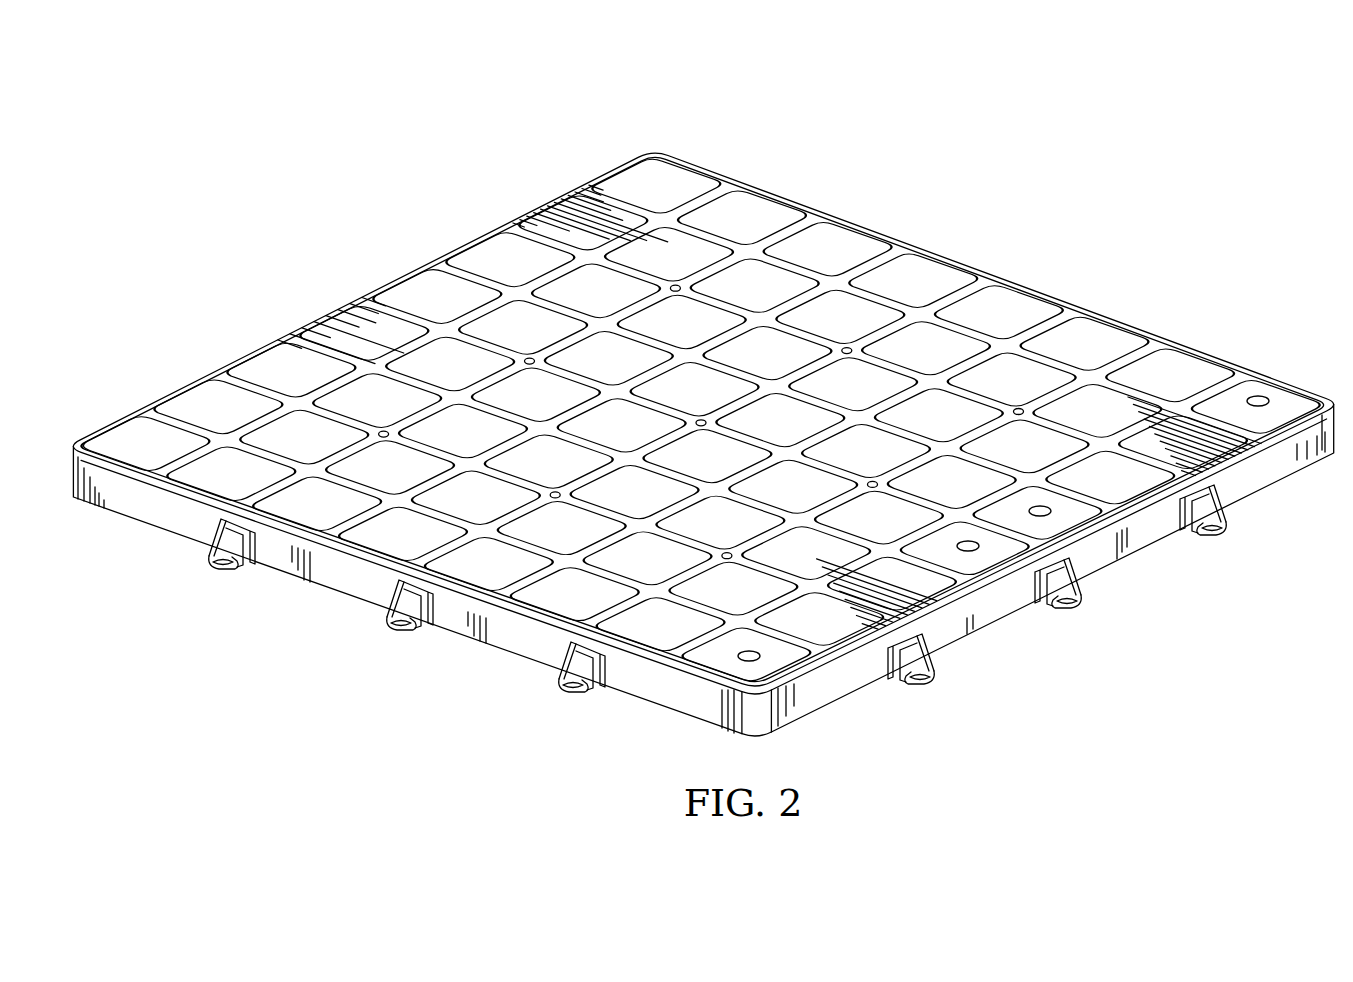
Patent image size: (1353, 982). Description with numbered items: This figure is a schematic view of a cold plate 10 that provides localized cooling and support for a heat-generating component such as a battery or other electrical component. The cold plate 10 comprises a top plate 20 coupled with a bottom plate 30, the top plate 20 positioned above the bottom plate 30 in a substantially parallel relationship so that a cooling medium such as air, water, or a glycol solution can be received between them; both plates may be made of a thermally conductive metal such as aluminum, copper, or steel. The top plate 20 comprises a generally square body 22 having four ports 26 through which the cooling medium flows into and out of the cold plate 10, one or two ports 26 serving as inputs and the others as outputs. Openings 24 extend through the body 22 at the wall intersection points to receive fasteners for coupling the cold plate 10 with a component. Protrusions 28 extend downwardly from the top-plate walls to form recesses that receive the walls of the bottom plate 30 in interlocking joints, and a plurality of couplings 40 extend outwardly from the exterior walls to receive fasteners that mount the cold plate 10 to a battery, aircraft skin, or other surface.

The cold plate 10 is at (703, 412).
The top plate 20 is at (703, 453).
The body 22 is at (765, 343).
The opening 24 is at (1019, 406).
The port 26 is at (1040, 505).
The protrusion 28 is at (1262, 396).
The bottom plate 30 is at (830, 713).
The coupling 40 is at (213, 568).